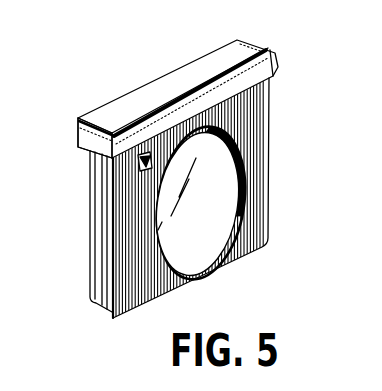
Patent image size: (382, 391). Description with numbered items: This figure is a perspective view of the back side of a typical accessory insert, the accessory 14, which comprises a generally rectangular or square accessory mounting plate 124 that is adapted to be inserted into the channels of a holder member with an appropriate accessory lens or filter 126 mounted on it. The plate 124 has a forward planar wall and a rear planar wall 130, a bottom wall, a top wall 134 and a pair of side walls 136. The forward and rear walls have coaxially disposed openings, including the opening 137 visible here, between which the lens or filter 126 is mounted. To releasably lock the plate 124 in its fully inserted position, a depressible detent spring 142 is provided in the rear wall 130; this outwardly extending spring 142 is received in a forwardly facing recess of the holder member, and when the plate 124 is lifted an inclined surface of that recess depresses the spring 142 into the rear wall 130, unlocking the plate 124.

The accessory 14 is at (167, 164).
The accessory mounting plate 124 is at (64, 138).
The accessory lens or filter 126 is at (215, 172).
The rear planar wall 130 is at (181, 283).
The top wall 134 is at (220, 59).
The side walls 136 is at (108, 292).
The opening 137 is at (158, 230).
The depressible detent spring 142 is at (163, 130).